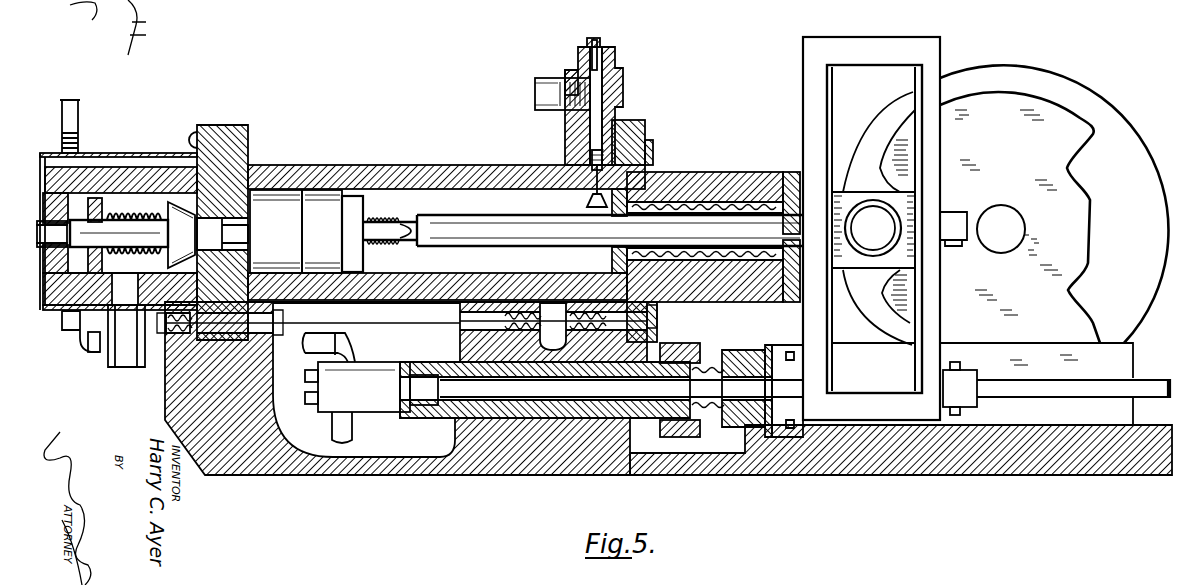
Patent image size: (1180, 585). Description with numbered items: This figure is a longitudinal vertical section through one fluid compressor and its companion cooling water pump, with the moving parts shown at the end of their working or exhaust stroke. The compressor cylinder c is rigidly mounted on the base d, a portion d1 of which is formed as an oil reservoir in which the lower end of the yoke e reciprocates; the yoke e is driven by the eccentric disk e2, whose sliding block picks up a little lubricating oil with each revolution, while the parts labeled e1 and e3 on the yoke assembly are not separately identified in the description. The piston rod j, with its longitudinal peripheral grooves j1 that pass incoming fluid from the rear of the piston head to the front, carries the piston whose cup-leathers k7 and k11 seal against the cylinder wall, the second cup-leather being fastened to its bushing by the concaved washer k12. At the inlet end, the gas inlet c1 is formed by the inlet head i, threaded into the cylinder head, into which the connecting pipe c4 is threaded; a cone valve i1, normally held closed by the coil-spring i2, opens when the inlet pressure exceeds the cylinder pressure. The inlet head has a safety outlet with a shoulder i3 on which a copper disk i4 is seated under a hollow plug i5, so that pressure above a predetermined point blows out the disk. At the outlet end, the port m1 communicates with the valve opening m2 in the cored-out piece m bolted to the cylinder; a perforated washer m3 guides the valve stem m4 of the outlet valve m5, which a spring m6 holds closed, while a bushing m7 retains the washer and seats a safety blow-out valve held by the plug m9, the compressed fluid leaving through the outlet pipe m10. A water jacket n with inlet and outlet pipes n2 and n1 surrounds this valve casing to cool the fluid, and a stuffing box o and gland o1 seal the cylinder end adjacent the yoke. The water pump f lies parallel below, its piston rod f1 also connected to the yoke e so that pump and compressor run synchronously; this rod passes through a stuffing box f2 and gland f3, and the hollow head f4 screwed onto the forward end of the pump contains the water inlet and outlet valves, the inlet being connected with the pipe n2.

The compressor cylinder c is at (418, 167).
The gas inlet c1 is at (586, 83).
The connecting pipe c4 is at (540, 92).
The base d is at (1108, 468).
The oil reservoir portion of base d1 is at (1009, 384).
The yoke e is at (548, 261).
The frame e1 is at (857, 44).
The eccentric disk e2 is at (1054, 215).
The cam e3 is at (860, 195).
The water pump f is at (428, 368).
The pump piston rod f1 is at (1150, 388).
The stuffing box f2 is at (720, 420).
The gland f3 is at (735, 357).
The hollow head f4 is at (371, 387).
The inlet head i is at (615, 92).
The cone valve i1 is at (588, 203).
The coil-spring i2 is at (584, 165).
The shoulder i3 is at (616, 76).
The copper disk i4 is at (578, 62).
The hollow plug i5 is at (598, 38).
The piston rod j is at (665, 229).
The longitudinal peripheral grooves j1 is at (392, 226).
The cup-leather k7 is at (276, 231).
The cup-leather k11 is at (366, 262).
The washer k12 is at (345, 190).
The cored-out piece m is at (208, 125).
The port m1 is at (250, 213).
The valve opening m2 is at (246, 180).
The perforated washer m3 is at (93, 190).
The valve stem m4 is at (119, 233).
The outlet valve m5 is at (181, 235).
The spring m6 is at (134, 225).
The bushing m7 is at (38, 290).
The plug m9 is at (78, 352).
The outlet pipe m10 is at (128, 364).
The water jacket n is at (132, 152).
The outlet pipe of water jacket n1 is at (79, 118).
The inlet pipe of water jacket n2 is at (343, 345).
The stuffing box o is at (692, 270).
The gland o1 is at (782, 276).